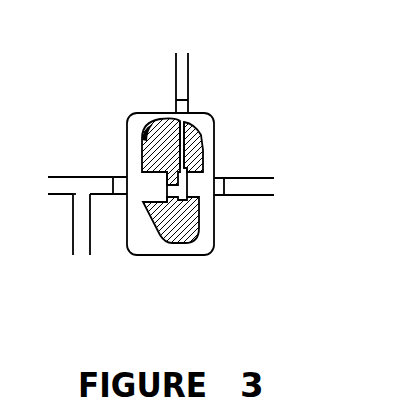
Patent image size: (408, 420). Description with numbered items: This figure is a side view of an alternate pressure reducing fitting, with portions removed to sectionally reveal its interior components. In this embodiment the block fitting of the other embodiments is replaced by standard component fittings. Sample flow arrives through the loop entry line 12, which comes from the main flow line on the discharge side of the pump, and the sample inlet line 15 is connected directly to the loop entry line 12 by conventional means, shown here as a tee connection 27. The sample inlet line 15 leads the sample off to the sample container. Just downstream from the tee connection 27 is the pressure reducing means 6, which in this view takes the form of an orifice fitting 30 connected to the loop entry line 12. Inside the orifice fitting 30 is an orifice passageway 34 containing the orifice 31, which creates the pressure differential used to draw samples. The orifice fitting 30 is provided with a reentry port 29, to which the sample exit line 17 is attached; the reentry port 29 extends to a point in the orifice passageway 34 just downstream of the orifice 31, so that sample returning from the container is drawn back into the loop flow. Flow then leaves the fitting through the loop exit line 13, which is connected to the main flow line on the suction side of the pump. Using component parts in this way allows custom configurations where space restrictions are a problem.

The pressure reducing means 6 is at (258, 156).
The loop entry line 12 is at (102, 177).
The loop exit line 13 is at (250, 196).
The sample inlet line 15 is at (73, 240).
The sample exit line 17 is at (189, 68).
The tee connection 27 is at (73, 197).
The reentry port 29 is at (189, 105).
The orifice fitting 30 is at (214, 133).
The orifice 31 is at (177, 185).
The orifice passageway 34 is at (153, 188).